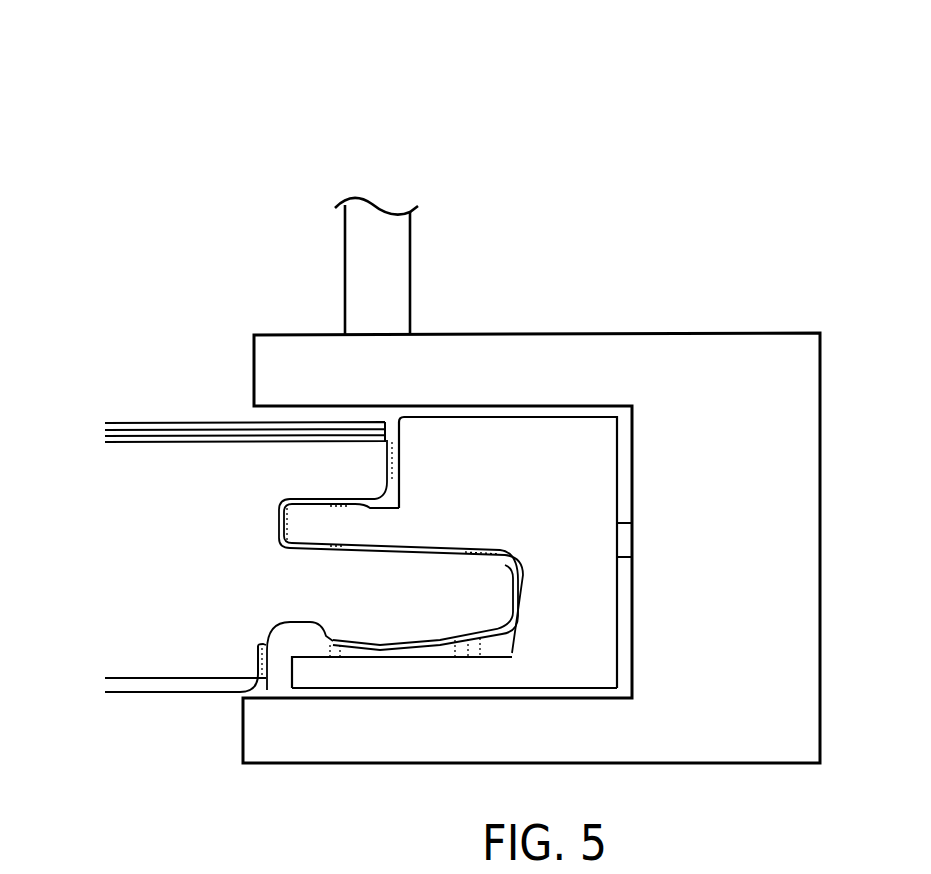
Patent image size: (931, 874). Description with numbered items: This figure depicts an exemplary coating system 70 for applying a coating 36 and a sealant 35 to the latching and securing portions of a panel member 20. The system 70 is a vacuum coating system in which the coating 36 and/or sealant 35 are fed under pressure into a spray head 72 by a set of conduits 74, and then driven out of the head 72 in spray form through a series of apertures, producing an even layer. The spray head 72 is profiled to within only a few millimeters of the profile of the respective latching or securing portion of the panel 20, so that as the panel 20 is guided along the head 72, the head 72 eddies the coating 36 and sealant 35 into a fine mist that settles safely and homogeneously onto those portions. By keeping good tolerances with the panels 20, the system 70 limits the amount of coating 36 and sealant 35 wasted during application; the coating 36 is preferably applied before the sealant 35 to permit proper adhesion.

The coating system 70 is at (408, 115).
The conduits 74 is at (353, 266).
The spray head 72 is at (548, 478).
The panel member 20 is at (145, 403).
The sealant 35 is at (388, 463).
The coating 36 is at (275, 625).